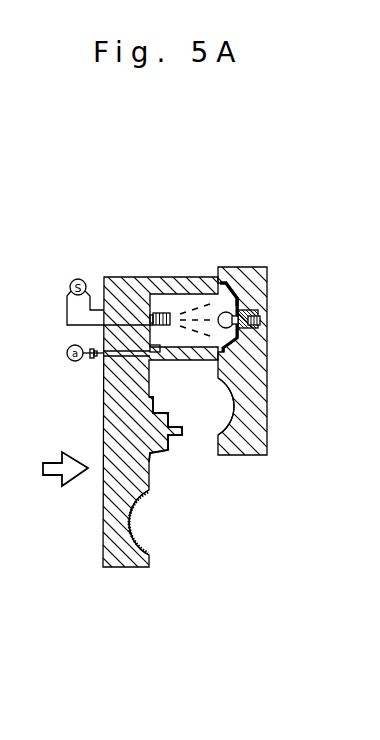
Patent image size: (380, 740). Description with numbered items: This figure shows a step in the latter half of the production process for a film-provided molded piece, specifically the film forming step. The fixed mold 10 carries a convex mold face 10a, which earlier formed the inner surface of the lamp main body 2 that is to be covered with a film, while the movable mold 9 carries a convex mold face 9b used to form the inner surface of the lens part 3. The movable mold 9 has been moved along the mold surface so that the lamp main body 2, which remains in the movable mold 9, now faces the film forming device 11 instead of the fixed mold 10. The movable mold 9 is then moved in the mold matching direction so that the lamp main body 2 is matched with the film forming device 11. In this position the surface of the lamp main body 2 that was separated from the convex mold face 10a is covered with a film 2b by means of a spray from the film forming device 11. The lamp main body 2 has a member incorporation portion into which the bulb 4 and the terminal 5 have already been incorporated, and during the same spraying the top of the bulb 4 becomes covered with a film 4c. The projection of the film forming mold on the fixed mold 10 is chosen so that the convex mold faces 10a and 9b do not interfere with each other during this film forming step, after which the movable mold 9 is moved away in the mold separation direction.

The fixed mold 10 is at (118, 288).
The convex mold face 10a is at (167, 455).
The lens part 3 is at (138, 542).
The movable mold 9 is at (247, 277).
The convex mold face 9b is at (247, 456).
The lamp main body 2 is at (233, 345).
The film 2b is at (228, 292).
The bulb 4 is at (264, 271).
The film 4c is at (242, 332).
The terminal 5 is at (253, 318).
The film forming device 11 is at (178, 290).